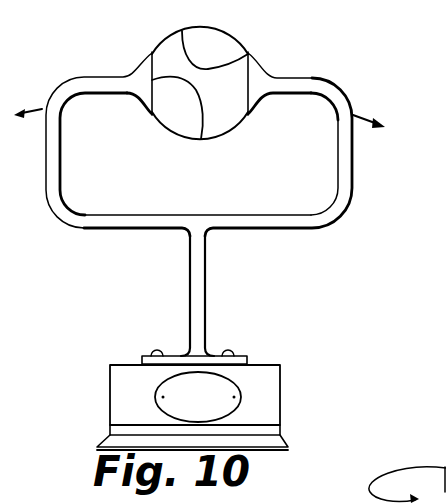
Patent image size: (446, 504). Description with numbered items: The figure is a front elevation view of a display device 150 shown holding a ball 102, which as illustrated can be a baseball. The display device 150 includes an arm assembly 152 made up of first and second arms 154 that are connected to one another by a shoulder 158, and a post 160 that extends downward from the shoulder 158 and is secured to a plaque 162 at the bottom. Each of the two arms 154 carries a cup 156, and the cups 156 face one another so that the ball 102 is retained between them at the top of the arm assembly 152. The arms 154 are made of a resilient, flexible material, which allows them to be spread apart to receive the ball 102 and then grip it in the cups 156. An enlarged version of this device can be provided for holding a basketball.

The ball 102 is at (227, 33).
The display device 150 is at (221, 236).
The arm assembly 152 is at (221, 129).
The first and second arms 154 is at (62, 166).
The cup 156 is at (128, 73).
The shoulder 158 is at (257, 213).
The post 160 is at (206, 280).
The plaque 162 is at (283, 388).